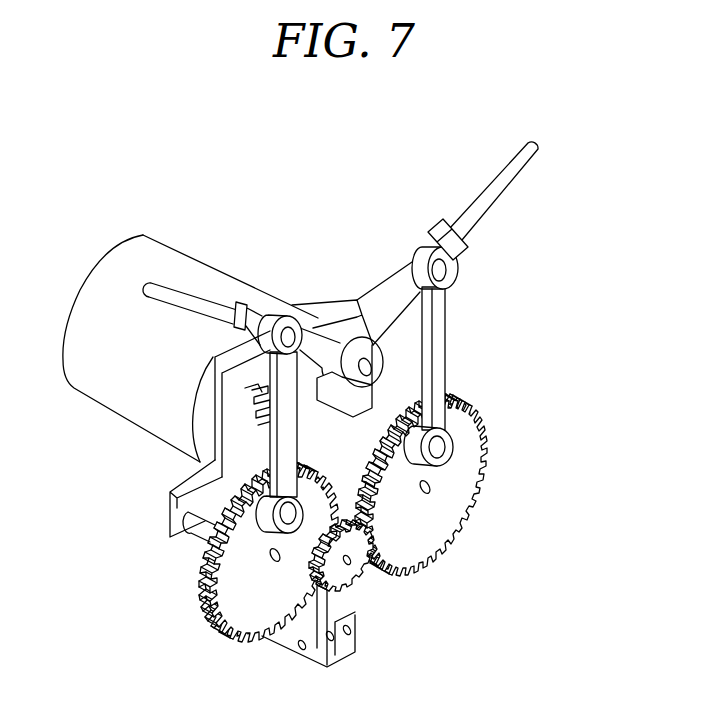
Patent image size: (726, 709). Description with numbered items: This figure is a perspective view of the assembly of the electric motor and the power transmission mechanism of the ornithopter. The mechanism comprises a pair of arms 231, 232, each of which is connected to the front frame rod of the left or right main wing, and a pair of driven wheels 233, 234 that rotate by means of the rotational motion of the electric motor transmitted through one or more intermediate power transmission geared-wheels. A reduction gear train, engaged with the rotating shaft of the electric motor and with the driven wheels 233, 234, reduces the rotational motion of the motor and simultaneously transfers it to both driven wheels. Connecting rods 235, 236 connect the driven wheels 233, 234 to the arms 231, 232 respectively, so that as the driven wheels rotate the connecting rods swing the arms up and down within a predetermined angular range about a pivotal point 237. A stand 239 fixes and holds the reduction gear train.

The arm 231 is at (145, 287).
The arm 232 is at (528, 155).
The driven wheel 233 is at (233, 592).
The driven wheel 234 is at (460, 497).
The connecting rod 235 is at (292, 433).
The connecting rod 236 is at (438, 353).
The pivotal point 237 is at (366, 358).
The stand 239 is at (333, 462).